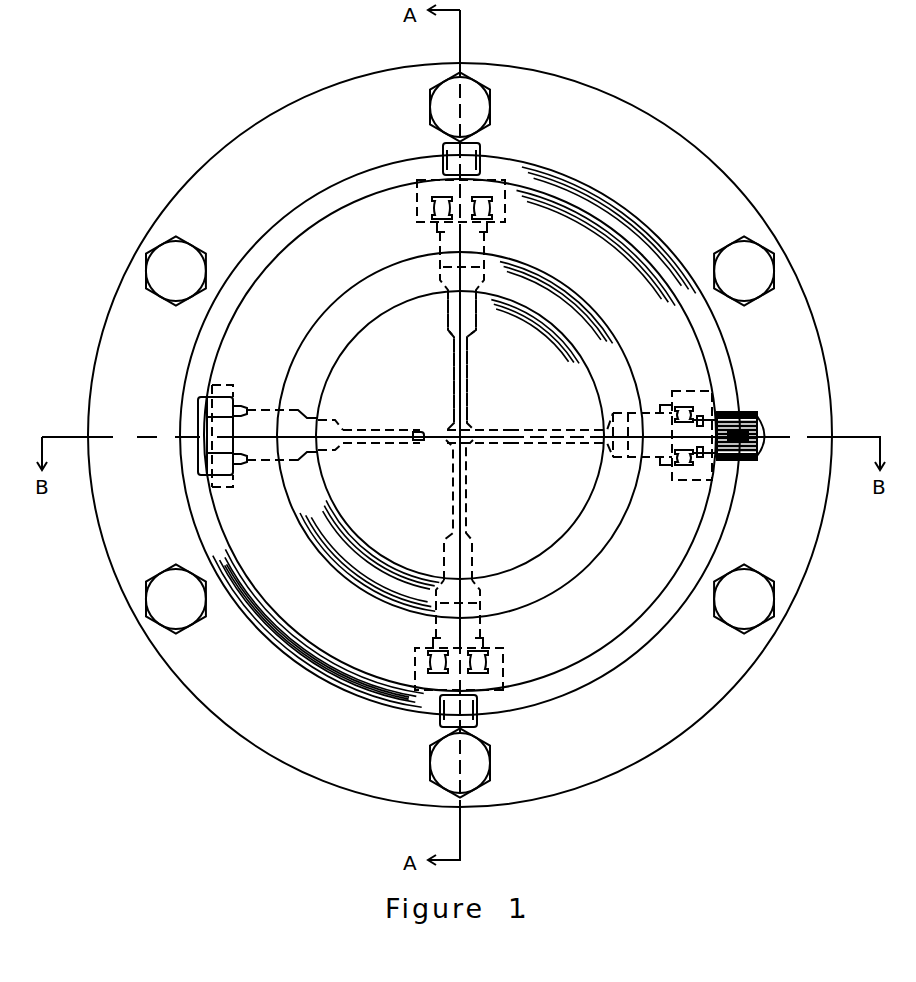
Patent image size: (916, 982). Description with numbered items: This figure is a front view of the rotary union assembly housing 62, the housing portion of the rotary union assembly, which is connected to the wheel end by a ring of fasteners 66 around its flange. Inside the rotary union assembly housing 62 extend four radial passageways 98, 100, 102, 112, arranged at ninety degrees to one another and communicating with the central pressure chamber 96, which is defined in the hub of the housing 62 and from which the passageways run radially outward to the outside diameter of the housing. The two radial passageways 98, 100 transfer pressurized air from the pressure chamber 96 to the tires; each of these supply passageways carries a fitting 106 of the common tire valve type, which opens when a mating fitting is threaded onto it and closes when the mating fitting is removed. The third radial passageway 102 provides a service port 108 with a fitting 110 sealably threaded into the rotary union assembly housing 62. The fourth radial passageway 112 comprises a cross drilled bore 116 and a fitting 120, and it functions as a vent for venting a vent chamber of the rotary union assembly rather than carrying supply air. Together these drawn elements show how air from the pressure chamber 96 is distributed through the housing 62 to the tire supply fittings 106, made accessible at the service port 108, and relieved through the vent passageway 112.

The rotary union assembly housing 62 is at (222, 220).
The fasteners 66 is at (492, 98).
The pressure chamber 96 is at (452, 432).
The radial passageway 98 is at (467, 372).
The radial passageway 100 is at (466, 498).
The radial passageway 102 is at (533, 432).
The fittings 106 is at (443, 160).
The service port 108 is at (783, 399).
The fitting 110 is at (735, 463).
The radial passageway 112 is at (380, 438).
The cross drilled bore 116 is at (418, 442).
The fitting 120 is at (198, 443).